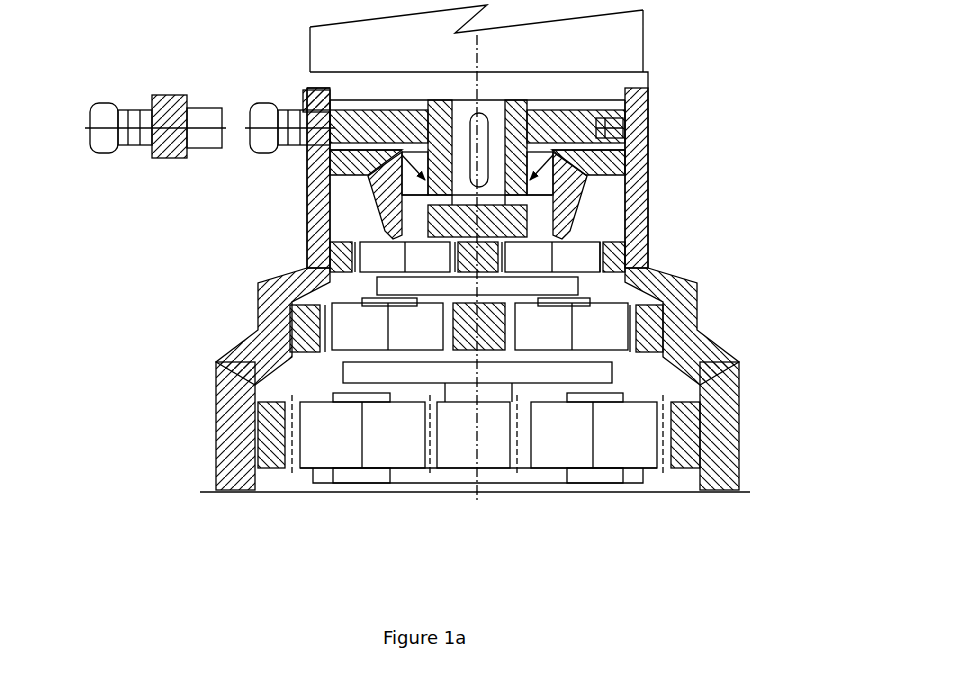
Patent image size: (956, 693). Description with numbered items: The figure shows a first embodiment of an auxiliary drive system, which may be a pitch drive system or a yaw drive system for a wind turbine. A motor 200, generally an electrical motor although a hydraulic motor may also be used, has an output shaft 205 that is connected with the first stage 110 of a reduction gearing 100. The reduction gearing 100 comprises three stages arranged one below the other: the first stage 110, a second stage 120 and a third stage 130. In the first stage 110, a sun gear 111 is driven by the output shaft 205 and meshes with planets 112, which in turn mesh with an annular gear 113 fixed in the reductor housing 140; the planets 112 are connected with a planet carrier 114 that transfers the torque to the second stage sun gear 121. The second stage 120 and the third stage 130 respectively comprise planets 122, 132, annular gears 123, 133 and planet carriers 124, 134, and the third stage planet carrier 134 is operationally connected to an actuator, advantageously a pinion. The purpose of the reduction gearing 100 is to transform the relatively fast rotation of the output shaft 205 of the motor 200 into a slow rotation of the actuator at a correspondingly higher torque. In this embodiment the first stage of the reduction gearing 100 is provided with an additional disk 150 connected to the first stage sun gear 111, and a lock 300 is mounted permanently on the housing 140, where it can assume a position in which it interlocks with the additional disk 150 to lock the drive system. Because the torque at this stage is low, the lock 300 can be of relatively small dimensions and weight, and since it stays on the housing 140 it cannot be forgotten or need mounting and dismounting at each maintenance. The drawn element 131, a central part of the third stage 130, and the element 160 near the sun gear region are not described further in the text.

The reduction gearing 100 is at (153, 433).
The first stage 110 is at (622, 287).
The sun gear 111 is at (603, 275).
The planets 112 is at (373, 253).
The annular gear 113 is at (333, 260).
The planet carrier 114 is at (390, 290).
The second stage 120 is at (657, 375).
The second stage sun gear 121 is at (478, 358).
The planets 122 is at (347, 320).
The annular gear 123 is at (323, 331).
The planet carrier 124 is at (367, 370).
The third stage 130 is at (653, 483).
The third ring hub 131 is at (492, 430).
The planets 132 is at (325, 448).
The annular gear 133 is at (267, 438).
The third stage planet carrier 134 is at (423, 488).
The reductor housing 140 is at (728, 398).
The additional disk 150 is at (597, 137).
The wedge lug 160 is at (573, 233).
The motor 200 is at (676, 44).
The output shaft 205 is at (463, 108).
The lock 300 is at (256, 160).